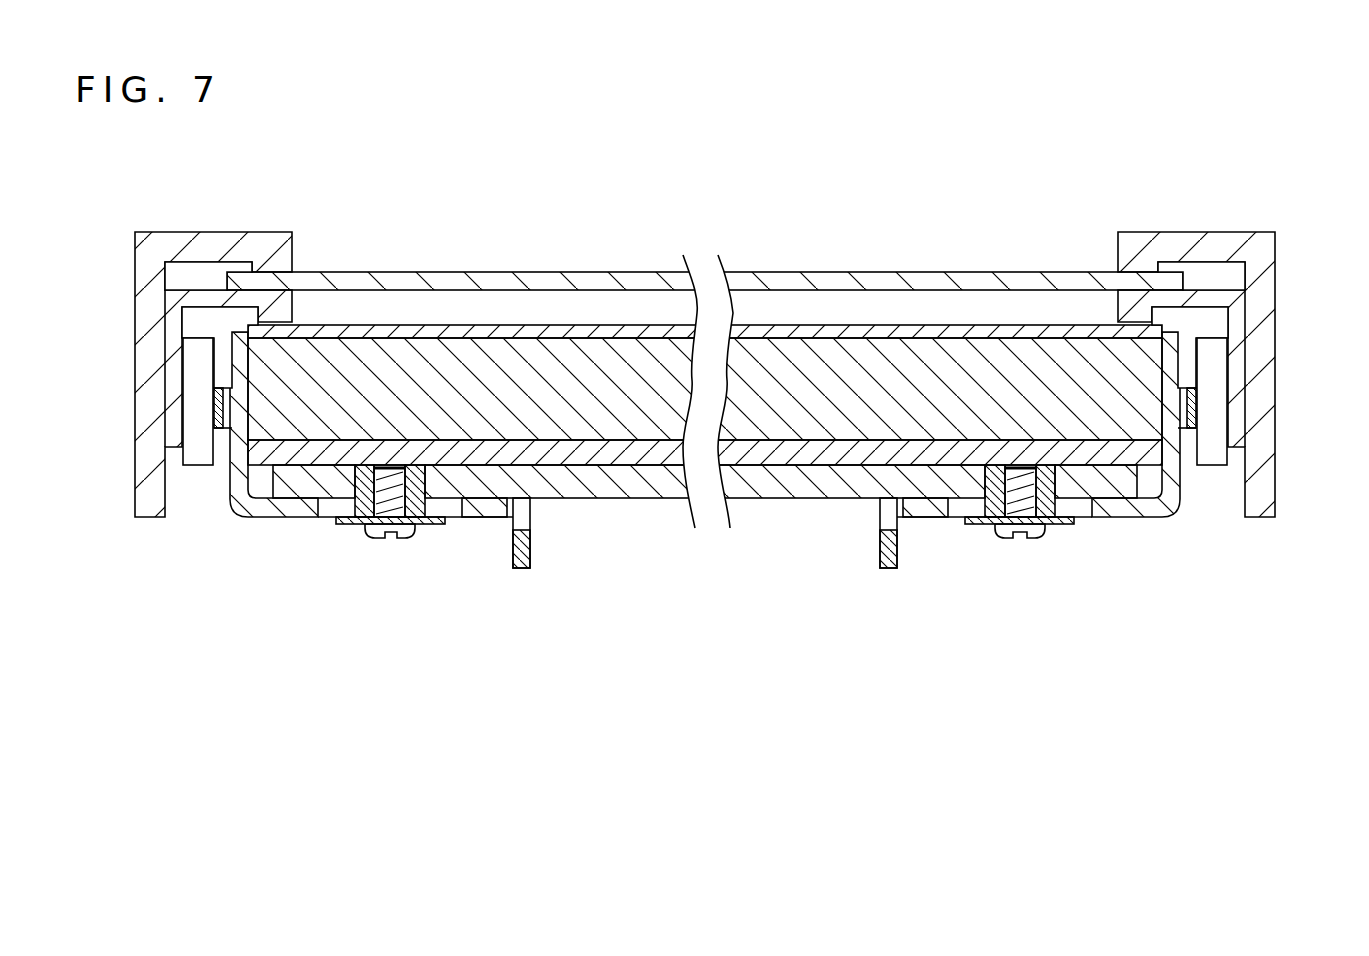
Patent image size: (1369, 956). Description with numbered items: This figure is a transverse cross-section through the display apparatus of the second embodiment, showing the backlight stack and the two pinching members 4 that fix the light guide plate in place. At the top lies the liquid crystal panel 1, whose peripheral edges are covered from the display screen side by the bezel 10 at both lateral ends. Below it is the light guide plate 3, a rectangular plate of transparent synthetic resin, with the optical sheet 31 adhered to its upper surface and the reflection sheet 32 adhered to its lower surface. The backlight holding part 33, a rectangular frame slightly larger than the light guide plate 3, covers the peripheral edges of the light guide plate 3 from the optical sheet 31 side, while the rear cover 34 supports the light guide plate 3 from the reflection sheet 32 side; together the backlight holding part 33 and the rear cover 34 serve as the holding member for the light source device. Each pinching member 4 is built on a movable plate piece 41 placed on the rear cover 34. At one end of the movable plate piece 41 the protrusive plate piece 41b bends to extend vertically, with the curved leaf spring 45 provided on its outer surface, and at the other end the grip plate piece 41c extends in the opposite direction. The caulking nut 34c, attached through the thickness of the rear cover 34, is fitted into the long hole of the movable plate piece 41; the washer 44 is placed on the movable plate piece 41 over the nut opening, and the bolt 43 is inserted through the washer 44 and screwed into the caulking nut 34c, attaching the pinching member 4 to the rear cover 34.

The liquid crystal panel 1 is at (628, 280).
The light guide plate 3 is at (777, 345).
The pinching member 4 is at (707, 489).
The bezel 10 is at (137, 323).
The optical sheet 31 is at (483, 333).
The reflection sheet 32 is at (782, 500).
The backlight holding part 33 is at (217, 293).
The rear cover 34 is at (197, 447).
The caulking nut 34c is at (418, 525).
The movable plate piece 41 is at (492, 517).
The protrusive plate piece 41b is at (277, 517).
The grip plate piece 41c is at (523, 565).
The bolt 43 is at (375, 532).
The washer 44 is at (347, 527).
The curved leaf spring 45 is at (227, 423).